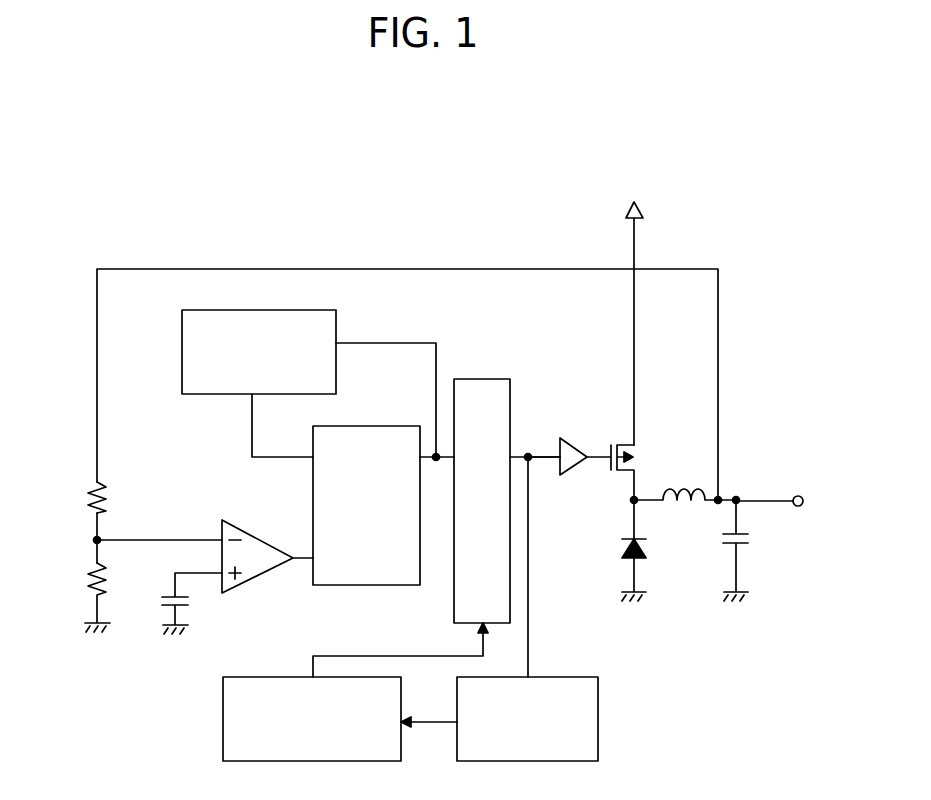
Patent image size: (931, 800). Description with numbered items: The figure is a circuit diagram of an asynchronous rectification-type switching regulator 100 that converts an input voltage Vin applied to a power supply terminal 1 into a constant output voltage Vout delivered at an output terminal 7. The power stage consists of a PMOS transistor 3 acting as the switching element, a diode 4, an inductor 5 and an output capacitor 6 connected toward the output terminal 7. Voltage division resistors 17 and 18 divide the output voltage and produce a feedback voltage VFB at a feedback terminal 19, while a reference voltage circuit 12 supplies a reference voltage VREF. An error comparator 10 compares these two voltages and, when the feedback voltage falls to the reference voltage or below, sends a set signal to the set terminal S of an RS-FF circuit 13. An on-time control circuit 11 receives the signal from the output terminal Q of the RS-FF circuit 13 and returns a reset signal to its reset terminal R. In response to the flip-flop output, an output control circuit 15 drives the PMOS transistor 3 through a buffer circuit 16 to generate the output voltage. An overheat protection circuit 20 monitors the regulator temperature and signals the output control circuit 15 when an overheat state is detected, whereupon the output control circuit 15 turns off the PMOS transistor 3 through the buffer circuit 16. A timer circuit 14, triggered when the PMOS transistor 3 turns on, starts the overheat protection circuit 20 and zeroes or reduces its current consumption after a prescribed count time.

The switching regulator 100 is at (455, 145).
The power supply terminal 1 is at (640, 200).
The PMOS transistor 3 is at (640, 450).
The diode 4 is at (620, 548).
The inductor 5 is at (685, 487).
The output capacitor 6 is at (728, 548).
The output terminal 7 is at (800, 495).
The error comparator 10 is at (237, 520).
The on-time control circuit 11 is at (182, 352).
The reference voltage circuit 12 is at (192, 608).
The RS-FF circuit 13 is at (370, 587).
The timer circuit 14 is at (598, 720).
The output control circuit 15 is at (482, 379).
The buffer circuit 16 is at (565, 477).
The voltage division resistor 17 is at (105, 485).
The voltage division resistor 18 is at (108, 590).
The feedback terminal 19 is at (103, 536).
The overheat protection circuit 20 is at (223, 720).